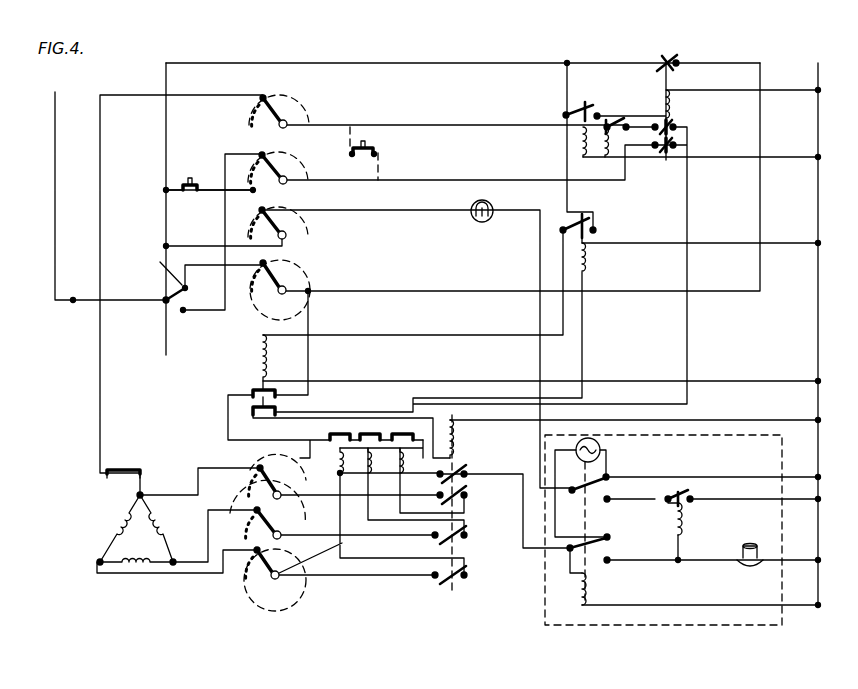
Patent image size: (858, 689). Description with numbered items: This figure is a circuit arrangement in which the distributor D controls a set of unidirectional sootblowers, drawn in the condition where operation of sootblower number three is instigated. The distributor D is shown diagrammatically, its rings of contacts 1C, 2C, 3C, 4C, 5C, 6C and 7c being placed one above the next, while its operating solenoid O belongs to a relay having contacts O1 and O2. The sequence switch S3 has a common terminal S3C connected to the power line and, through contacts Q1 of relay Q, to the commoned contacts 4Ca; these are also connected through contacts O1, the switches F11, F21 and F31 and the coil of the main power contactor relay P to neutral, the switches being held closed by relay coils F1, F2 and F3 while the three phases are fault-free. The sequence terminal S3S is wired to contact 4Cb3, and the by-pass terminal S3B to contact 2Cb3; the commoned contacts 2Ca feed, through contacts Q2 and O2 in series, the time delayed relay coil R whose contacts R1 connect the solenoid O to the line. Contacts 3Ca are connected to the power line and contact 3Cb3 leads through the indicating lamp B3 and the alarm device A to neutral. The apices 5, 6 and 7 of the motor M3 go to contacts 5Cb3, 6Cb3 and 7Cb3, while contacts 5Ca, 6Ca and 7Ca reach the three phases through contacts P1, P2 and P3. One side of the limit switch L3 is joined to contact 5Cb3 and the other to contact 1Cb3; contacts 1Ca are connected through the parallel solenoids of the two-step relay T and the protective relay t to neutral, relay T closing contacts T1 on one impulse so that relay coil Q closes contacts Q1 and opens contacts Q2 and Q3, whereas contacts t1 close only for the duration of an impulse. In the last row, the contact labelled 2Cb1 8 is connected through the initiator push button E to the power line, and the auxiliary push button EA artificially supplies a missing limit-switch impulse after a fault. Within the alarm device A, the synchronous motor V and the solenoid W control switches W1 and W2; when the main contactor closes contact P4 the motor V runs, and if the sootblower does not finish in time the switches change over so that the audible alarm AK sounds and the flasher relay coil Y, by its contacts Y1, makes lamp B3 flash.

The distributor D is at (284, 57).
The distributor contact 1Cb3 is at (275, 96).
The commoned contacts of ring one 1Ca is at (298, 118).
The ring of contacts 1C is at (318, 108).
The distributor contact 2Cb3 is at (256, 152).
The commoned contacts of ring two 2Ca is at (300, 178).
The ring of contacts 2C is at (298, 162).
The initiator push button switch E is at (196, 177).
The auxiliary push button EA is at (377, 147).
The row-eighteen distributor contact 2Cb1 is at (209, 202).
The row-eighteen distributor contact 8 is at (250, 192).
The distributor contact 3Cb3 is at (300, 208).
The commoned contacts of ring three 3Ca is at (300, 230).
The ring of contacts 3C is at (316, 250).
The distributor contact 4Cb3 is at (296, 266).
The commoned contacts of ring four 4Ca is at (280, 287).
The ring of contacts 4C is at (312, 296).
The sequence terminal S3S is at (151, 267).
The common terminal S3C is at (163, 298).
The by-pass terminal S3B is at (185, 311).
The sequence switch S3 is at (166, 300).
The operating solenoid O is at (256, 353).
The relay contacts O1 is at (250, 384).
The relay contacts O2 is at (250, 407).
The phase-fault switch F11 is at (336, 430).
The phase-fault switch F21 is at (370, 432).
The phase-fault switch F31 is at (402, 432).
The relay coil F1 is at (352, 461).
The relay coil F2 is at (380, 461).
The relay coil F3 is at (411, 461).
The main power contactor relay P is at (460, 439).
The contactor contact P4 is at (463, 468).
The contactor contact P1 is at (464, 489).
The contactor contact P2 is at (462, 528).
The contactor contact P3 is at (462, 568).
The indicating lamp B3 is at (479, 221).
The relay contacts R1 is at (589, 226).
The time delayed relay coil R is at (588, 263).
The relay contacts T1 is at (571, 113).
The two-step relay T is at (572, 154).
The relay contacts t1 is at (620, 118).
The protective relay t is at (605, 152).
The relay contacts Q1 is at (680, 55).
The relay coil Q is at (678, 104).
The relay contacts Q3 is at (684, 124).
The relay contacts Q2 is at (684, 144).
The limit switch L3 is at (123, 462).
The motor apex 5 is at (147, 486).
The motor M3 is at (128, 509).
The motor apex 6 is at (178, 553).
The motor apex 7 is at (91, 560).
The distributor contact 5Cb3 is at (256, 466).
The commoned contacts of ring five 5Ca is at (262, 488).
The ring of contacts 5C is at (304, 487).
The distributor contact 6Cb3 is at (252, 510).
The commoned contacts of ring six 6Ca is at (262, 530).
The ring of contacts 6C is at (300, 518).
The commoned contacts of ring seven 7Ca is at (335, 548).
The distributor contact 7Cb3 is at (240, 566).
The ring of contacts 7c is at (310, 587).
The alarm device A is at (712, 463).
The synchronous motor V is at (598, 444).
The alarm switch W1 is at (603, 488).
The flasher relay contacts Y1 is at (691, 492).
The flasher relay coil Y is at (682, 517).
The alarm switch W2 is at (603, 539).
The solenoid W is at (597, 581).
The audible alarm AK is at (768, 534).